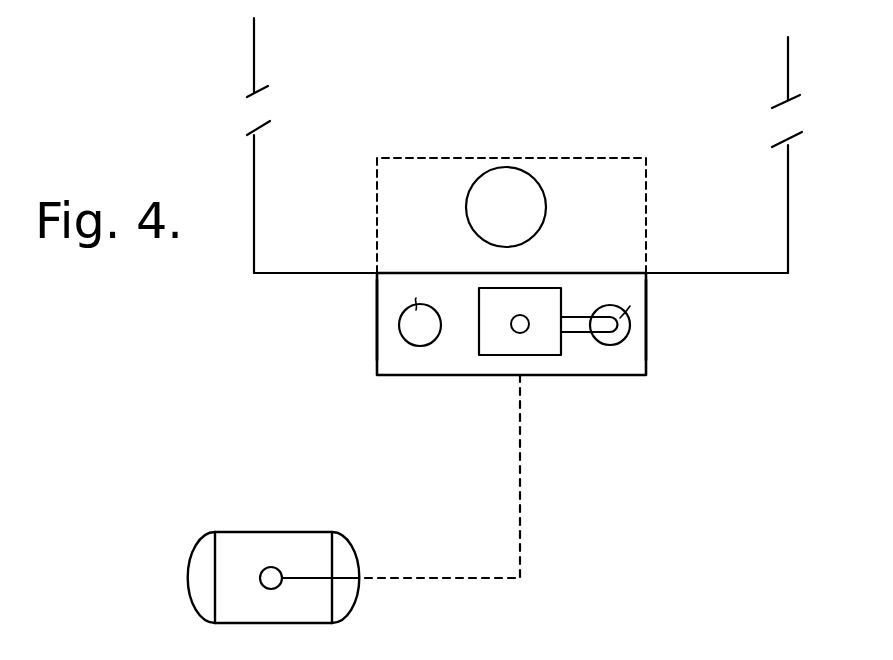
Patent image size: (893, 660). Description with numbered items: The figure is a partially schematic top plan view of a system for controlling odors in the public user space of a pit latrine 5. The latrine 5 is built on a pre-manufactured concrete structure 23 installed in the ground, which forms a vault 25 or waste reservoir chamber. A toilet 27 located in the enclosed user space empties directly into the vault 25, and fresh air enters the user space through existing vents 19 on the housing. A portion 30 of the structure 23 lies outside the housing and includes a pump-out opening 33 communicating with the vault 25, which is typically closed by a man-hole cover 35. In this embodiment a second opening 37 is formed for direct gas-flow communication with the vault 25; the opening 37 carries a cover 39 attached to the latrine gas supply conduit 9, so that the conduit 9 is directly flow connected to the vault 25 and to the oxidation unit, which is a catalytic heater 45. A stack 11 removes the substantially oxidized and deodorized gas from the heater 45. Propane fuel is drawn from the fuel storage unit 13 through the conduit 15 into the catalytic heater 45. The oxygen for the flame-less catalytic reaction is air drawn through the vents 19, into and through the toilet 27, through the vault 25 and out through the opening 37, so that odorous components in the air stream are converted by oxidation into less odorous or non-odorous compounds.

The pit latrine 5 is at (568, 140).
The latrine gas supply conduit 9 is at (581, 334).
The stack 11 is at (526, 316).
The fuel storage unit 13 is at (290, 532).
The conduit 15 is at (521, 456).
The vents 19 is at (250, 100).
The concrete structure 23 is at (647, 340).
The vault 25 is at (376, 300).
The toilet 27 is at (545, 200).
The portion of the structure 30 is at (424, 378).
The pump-out opening 33 is at (410, 336).
The man-hole cover 35 is at (418, 308).
The second opening 37 is at (606, 345).
The cover 39 is at (620, 318).
The catalytic heater 45 is at (479, 340).